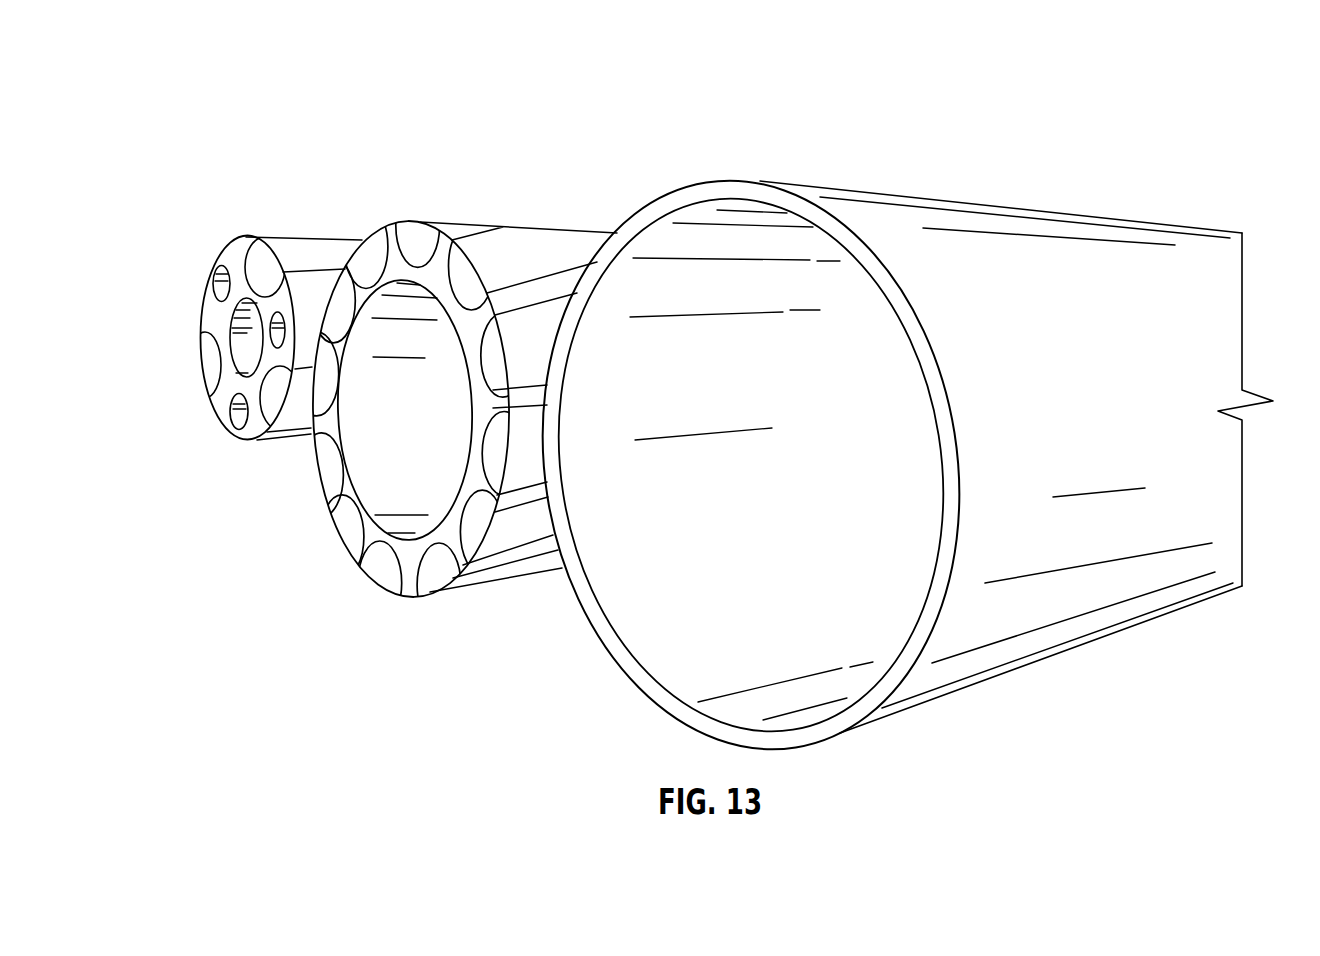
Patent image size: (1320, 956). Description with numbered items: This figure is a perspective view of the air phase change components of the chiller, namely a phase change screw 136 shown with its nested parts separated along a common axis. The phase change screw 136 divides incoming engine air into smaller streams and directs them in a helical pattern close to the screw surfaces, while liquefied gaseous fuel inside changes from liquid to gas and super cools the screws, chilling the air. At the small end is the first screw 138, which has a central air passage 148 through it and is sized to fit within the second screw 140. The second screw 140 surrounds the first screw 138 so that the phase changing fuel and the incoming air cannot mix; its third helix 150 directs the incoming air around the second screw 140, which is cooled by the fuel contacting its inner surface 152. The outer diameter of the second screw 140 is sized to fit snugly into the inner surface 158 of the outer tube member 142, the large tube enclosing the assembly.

The phase change screw 136 is at (223, 132).
The first screw 138 is at (226, 418).
The second screw 140 is at (380, 570).
The outer tube member 142 is at (627, 667).
The central air passage 148 is at (245, 328).
The third helix 150 is at (388, 226).
The inner surface 152 is at (387, 424).
The inner surface 158 is at (675, 499).